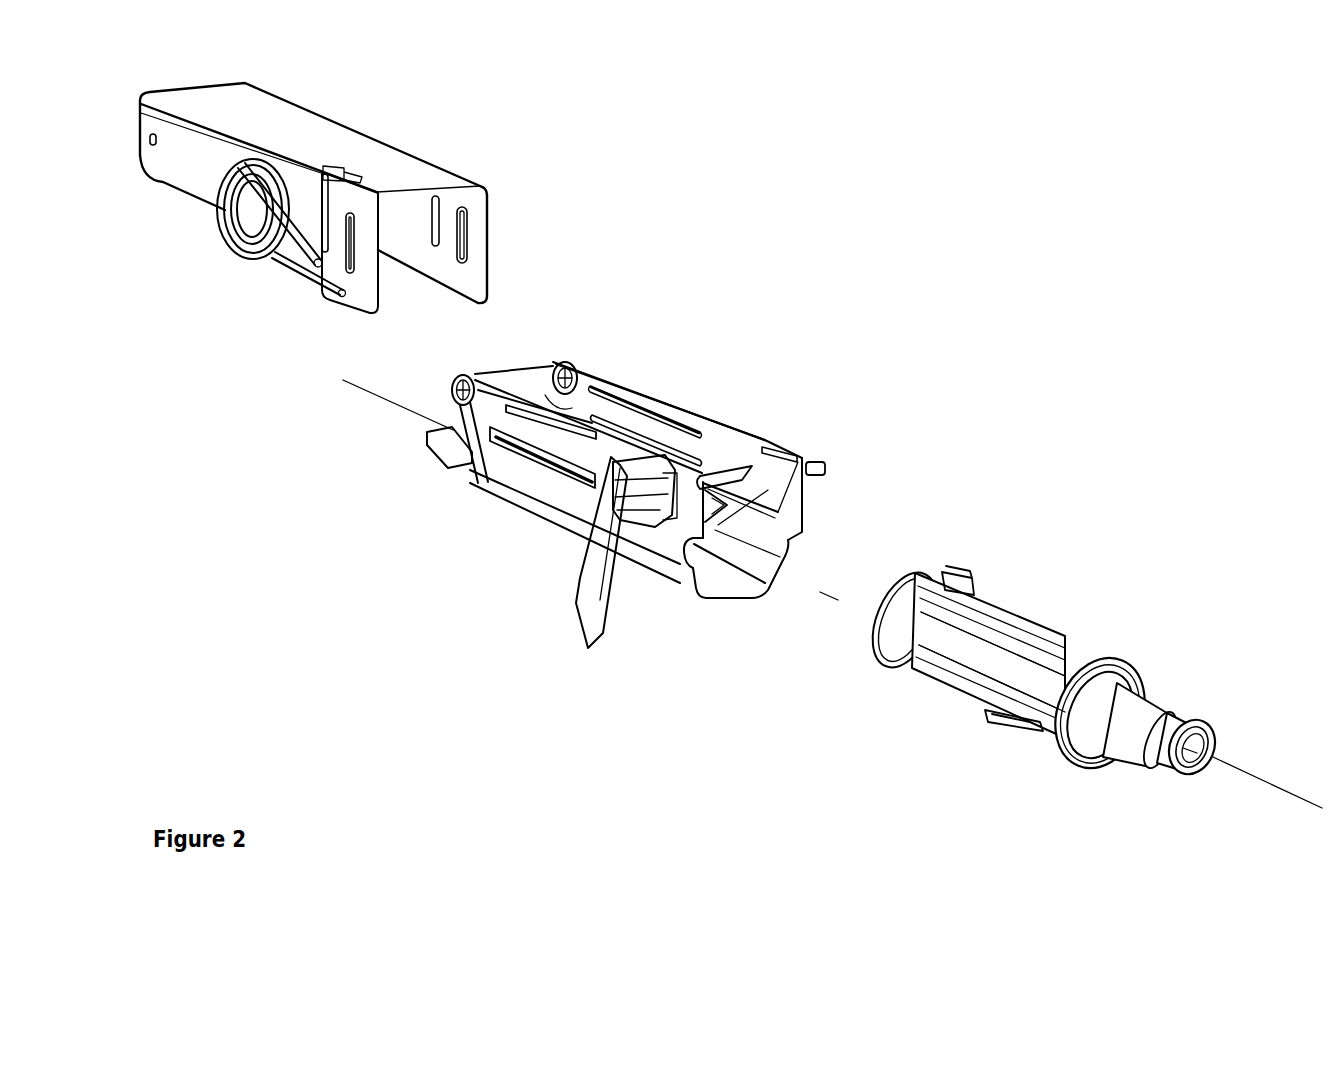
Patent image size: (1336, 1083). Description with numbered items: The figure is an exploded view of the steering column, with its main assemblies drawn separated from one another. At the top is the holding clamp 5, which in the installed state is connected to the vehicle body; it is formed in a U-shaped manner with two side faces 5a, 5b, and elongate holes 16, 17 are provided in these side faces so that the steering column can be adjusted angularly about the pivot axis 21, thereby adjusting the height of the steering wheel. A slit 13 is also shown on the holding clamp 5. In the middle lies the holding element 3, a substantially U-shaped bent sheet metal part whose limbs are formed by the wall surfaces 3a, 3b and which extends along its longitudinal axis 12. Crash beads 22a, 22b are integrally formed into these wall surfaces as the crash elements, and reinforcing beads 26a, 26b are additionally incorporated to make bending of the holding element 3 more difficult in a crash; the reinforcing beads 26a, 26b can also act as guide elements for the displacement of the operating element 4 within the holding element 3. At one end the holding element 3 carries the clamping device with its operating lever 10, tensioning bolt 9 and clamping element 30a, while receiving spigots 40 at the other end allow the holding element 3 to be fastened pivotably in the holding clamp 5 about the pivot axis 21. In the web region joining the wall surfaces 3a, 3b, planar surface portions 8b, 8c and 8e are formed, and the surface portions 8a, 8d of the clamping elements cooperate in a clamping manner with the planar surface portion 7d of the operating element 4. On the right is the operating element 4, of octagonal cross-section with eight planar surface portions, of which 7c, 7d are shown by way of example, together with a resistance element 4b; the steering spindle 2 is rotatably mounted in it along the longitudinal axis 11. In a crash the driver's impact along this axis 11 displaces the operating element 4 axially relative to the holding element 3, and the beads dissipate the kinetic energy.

The steering spindle 2 is at (1140, 710).
The holding element 3 is at (695, 371).
The wall surface 3a is at (703, 433).
The wall surface 3b is at (563, 500).
The operating element 4 is at (1061, 593).
The resistance element 4b is at (887, 618).
The holding clamp 5 is at (282, 119).
The side face 5a is at (470, 290).
The side face 5b is at (283, 230).
The planar surface portion 7c is at (940, 690).
The planar surface portion 7d is at (943, 618).
The planar surface portion 8a is at (768, 515).
The planar surface portion 8b is at (745, 572).
The planar surface portion 8c is at (717, 542).
The planar surface portion 8d is at (683, 572).
The planar surface portion 8e is at (722, 590).
The tensioning bolt 9 is at (755, 465).
The operating lever 10 is at (587, 603).
The longitudinal axis of operating element 11 is at (840, 598).
The longitudinal axis of holding element 12 is at (377, 397).
The slit 13 is at (149, 140).
The elongate hole 16 is at (467, 235).
The elongate hole 17 is at (340, 256).
The pivot axis 21 is at (320, 120).
The crash bead 22a is at (609, 414).
The crash bead 22b is at (513, 471).
The reinforcing bead 26a is at (637, 400).
The reinforcing bead 26b is at (520, 429).
The clamping element 30a is at (779, 473).
The receiving spigot 40 is at (460, 392).